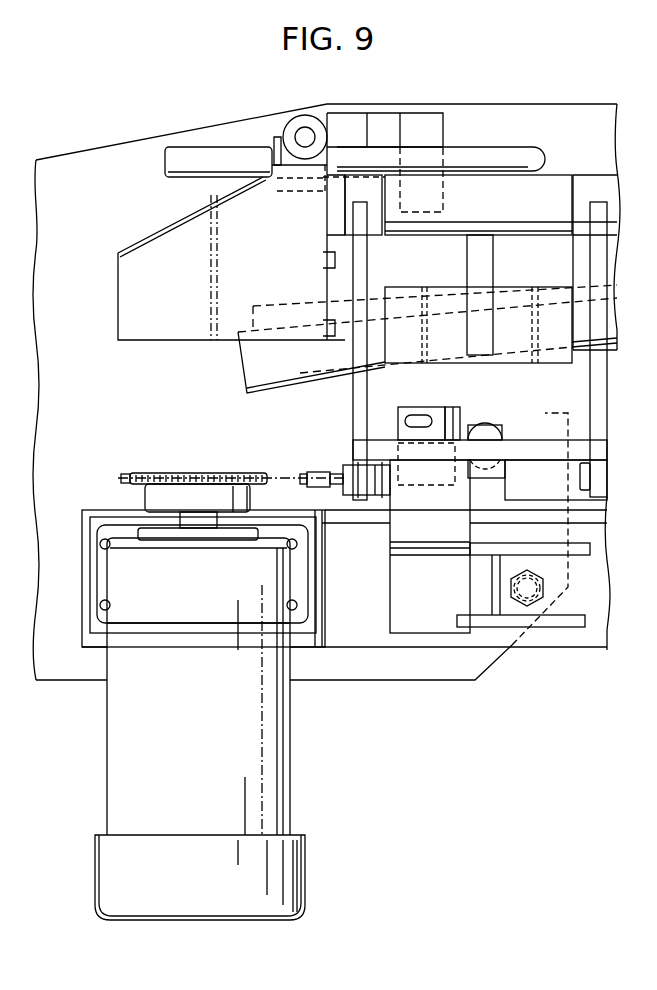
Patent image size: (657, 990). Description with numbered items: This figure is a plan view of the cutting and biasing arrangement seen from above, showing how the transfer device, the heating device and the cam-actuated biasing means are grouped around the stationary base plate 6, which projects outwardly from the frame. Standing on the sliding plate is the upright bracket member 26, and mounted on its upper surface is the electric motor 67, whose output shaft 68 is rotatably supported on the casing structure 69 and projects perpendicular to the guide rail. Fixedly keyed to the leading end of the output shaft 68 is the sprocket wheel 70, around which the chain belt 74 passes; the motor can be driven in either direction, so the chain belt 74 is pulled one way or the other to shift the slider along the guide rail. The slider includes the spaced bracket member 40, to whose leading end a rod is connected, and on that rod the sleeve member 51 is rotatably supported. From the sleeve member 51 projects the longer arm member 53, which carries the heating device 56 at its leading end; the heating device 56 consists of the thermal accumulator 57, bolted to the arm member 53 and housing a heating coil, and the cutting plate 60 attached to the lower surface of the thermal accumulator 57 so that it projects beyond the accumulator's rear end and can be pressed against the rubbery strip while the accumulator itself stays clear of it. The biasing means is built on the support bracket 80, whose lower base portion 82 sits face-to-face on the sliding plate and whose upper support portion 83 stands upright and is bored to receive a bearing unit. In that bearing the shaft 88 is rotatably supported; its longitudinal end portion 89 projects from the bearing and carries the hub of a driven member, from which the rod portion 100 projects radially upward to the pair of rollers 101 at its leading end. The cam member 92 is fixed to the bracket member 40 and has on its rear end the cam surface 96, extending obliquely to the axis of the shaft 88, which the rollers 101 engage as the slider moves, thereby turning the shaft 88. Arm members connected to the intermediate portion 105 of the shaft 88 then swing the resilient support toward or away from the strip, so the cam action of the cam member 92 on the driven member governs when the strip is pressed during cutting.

The stationary base plate 6 is at (385, 680).
The bracket member 26 is at (82, 546).
The bracket member 40 is at (353, 405).
The sleeve member 51 is at (547, 175).
The arm member 53 is at (470, 263).
The heating device 56 is at (550, 366).
The thermal accumulator 57 is at (240, 365).
The cutting plate 60 is at (312, 302).
The electric motor 67 is at (310, 856).
The output shaft 68 is at (212, 504).
The casing structure 69 is at (207, 750).
The sprocket wheel 70 is at (145, 492).
The chain belt 74 is at (294, 472).
The support bracket 80 is at (412, 106).
The lower base portion 82 is at (437, 112).
The upper support portion 83 is at (412, 126).
The shaft 88 is at (514, 142).
The longitudinal end portion 89 is at (205, 146).
The cam member 92 is at (118, 306).
The cam surface 96 is at (167, 226).
The rod portion 100 is at (304, 127).
The rollers 101 is at (277, 136).
The intermediate portion 105 is at (478, 148).